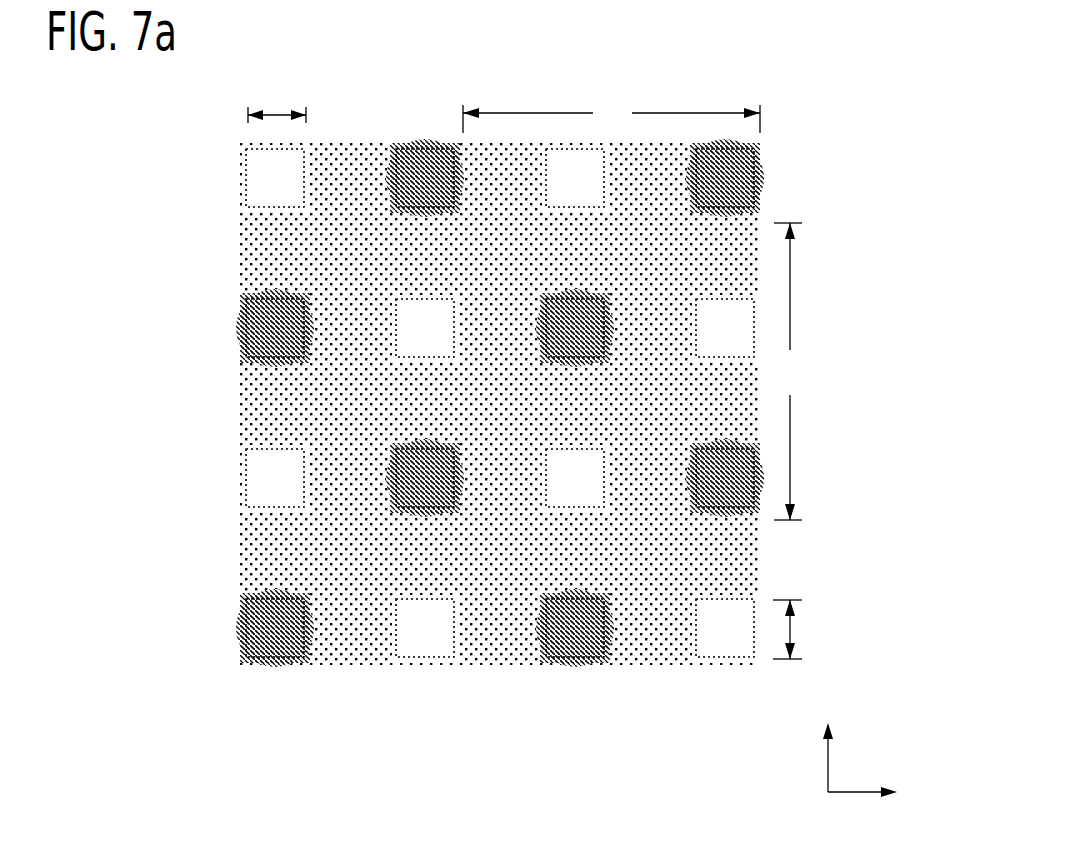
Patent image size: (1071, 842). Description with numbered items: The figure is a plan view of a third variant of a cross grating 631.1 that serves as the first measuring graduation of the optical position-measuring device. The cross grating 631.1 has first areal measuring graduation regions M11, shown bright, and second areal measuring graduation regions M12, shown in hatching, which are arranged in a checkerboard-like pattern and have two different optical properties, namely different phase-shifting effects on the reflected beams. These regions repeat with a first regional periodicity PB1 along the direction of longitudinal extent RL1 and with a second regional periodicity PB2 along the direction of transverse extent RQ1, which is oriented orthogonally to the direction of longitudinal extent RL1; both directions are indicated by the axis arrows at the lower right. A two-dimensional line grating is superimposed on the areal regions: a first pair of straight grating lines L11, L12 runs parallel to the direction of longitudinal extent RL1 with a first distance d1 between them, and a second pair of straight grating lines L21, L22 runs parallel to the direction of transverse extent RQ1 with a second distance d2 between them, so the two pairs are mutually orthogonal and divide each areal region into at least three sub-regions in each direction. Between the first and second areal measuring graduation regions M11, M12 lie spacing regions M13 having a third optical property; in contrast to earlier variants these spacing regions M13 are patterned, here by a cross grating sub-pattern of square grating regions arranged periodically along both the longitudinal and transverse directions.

The cross grating 631.1 is at (145, 412).
The first areal measuring graduation region M11 is at (268, 181).
The second areal measuring graduation region M12 is at (264, 333).
The spacing region M13 is at (264, 262).
The first straight grating line L11 is at (240, 599).
The second straight grating line of first pair L12 is at (240, 660).
The first straight grating line of second pair L21 is at (247, 672).
The second straight grating line of second pair L22 is at (304, 672).
The first distance d1 is at (795, 632).
The second distance d2 is at (276, 107).
The first regional periodicity PB1 is at (611, 116).
The second regional periodicity PB2 is at (792, 371).
The direction of transverse extent RQ1 is at (808, 745).
The direction of longitudinal extent RL1 is at (882, 796).